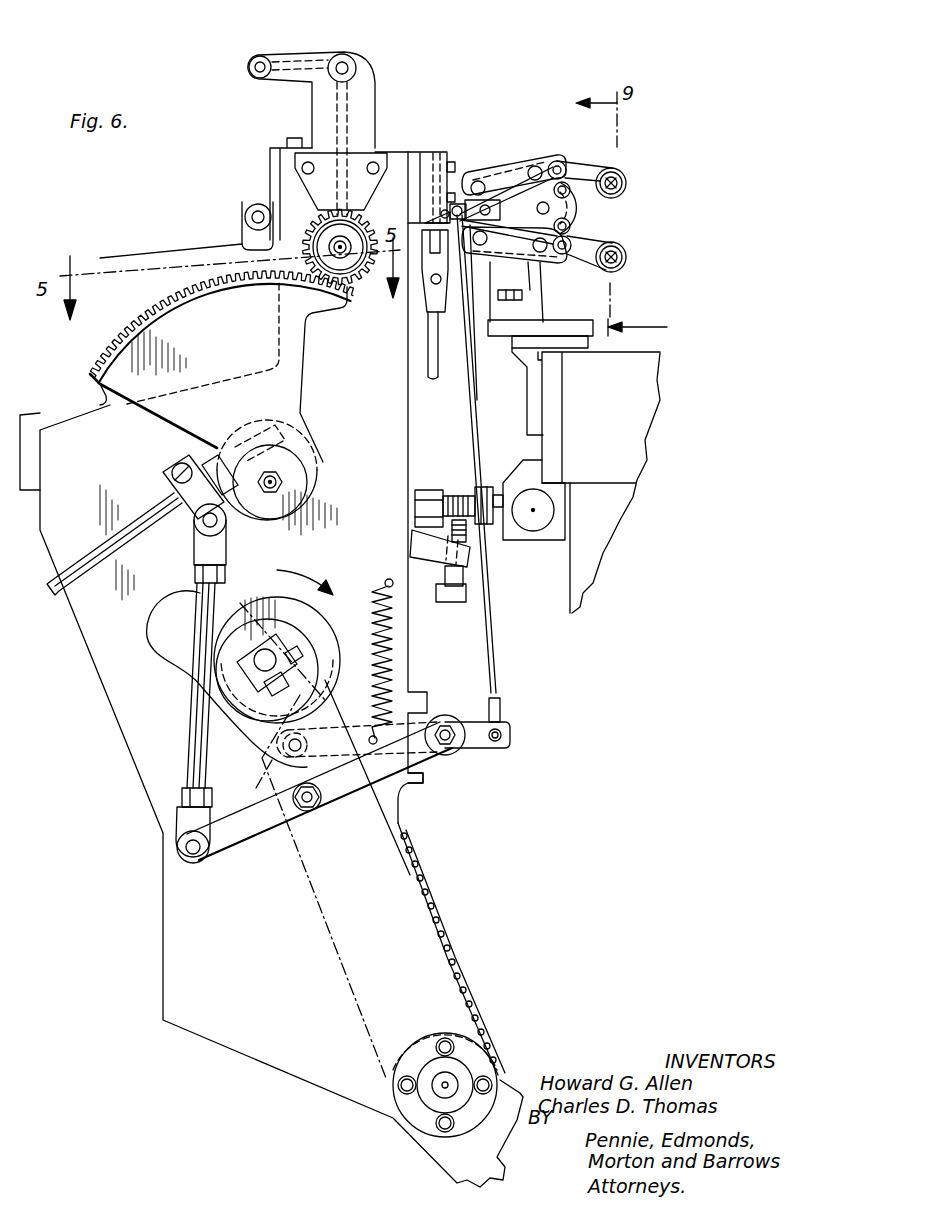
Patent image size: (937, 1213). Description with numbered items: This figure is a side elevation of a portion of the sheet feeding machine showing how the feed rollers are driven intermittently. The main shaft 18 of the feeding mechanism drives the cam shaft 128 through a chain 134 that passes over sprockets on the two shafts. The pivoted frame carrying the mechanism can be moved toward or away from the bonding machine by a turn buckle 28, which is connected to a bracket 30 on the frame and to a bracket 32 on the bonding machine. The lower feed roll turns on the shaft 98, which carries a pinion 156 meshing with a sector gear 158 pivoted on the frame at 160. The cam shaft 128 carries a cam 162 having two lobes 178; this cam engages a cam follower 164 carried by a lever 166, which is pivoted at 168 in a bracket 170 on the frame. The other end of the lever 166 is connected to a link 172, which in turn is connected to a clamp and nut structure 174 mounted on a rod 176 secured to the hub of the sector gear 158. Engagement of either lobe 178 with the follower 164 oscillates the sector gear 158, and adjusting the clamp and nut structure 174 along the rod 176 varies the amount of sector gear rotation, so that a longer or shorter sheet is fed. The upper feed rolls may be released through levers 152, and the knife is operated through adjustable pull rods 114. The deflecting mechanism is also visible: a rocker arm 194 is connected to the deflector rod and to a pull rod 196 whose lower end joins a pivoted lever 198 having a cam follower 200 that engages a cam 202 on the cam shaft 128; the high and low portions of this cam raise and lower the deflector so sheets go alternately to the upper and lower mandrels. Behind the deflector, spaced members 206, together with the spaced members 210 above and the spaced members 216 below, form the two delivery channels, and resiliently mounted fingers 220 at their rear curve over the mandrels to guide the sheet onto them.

The shaft 18 is at (443, 1088).
The turn buckle 28 is at (452, 494).
The bracket 30 is at (432, 486).
The bracket 32 is at (553, 541).
The shaft 98 is at (343, 252).
The adjustable pull rods 114 is at (440, 354).
The cam shaft 128 is at (262, 680).
The chain 134 is at (462, 957).
The levers 152 is at (300, 55).
The pinion 156 is at (363, 222).
The sector gear 158 is at (155, 310).
The pivot 160 is at (275, 483).
The cam 162 is at (252, 592).
The cam follower 164 is at (321, 797).
The lever 166 is at (232, 856).
The pivot 168 is at (446, 746).
The bracket 170 is at (421, 790).
The link 172 is at (183, 825).
The clamp and nut structure 174 is at (168, 474).
The rod 176 is at (112, 540).
The lobes 178 is at (146, 635).
The rocker arm 194 is at (456, 206).
The pull rod 196 is at (476, 410).
The pivoted lever 198 is at (472, 727).
The cam follower 200 is at (247, 785).
The cam 202 is at (288, 748).
The spaced members 206 is at (570, 213).
The spaced members 210 is at (523, 167).
The spaced members 216 is at (556, 258).
The fingers 220 is at (588, 163).